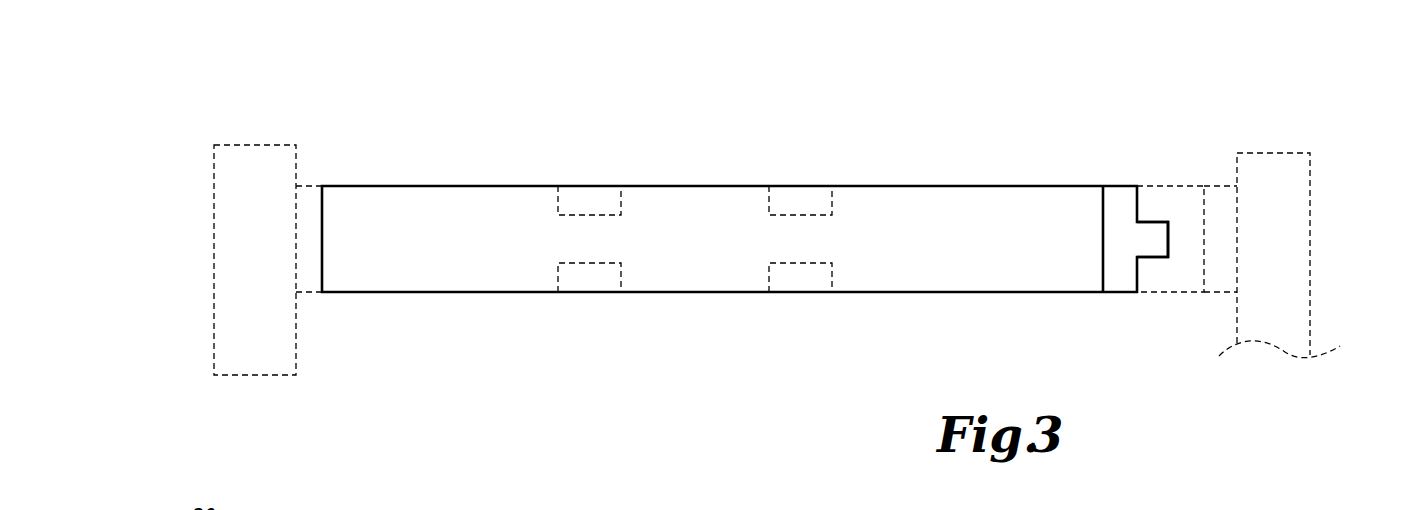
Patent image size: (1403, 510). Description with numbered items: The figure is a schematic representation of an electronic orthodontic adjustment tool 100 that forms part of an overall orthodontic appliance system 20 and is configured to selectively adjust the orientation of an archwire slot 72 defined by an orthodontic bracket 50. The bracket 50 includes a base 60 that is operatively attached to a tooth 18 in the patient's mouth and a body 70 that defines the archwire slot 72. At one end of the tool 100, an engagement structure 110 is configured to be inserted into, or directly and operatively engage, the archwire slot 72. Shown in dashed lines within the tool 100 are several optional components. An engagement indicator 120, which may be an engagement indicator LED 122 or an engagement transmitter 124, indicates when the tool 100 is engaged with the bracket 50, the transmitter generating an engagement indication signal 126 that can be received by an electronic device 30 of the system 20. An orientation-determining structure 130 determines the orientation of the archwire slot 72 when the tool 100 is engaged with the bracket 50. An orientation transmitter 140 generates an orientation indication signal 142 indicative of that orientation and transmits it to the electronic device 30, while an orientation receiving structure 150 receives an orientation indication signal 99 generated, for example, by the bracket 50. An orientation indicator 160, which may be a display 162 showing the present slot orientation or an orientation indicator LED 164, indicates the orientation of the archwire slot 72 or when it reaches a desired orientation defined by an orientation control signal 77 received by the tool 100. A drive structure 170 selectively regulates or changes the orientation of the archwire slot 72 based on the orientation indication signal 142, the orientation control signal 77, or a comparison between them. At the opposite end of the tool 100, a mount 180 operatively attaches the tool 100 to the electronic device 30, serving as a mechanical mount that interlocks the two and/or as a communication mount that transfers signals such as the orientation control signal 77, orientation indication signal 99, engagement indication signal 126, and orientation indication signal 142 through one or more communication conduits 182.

The tooth 18 is at (1310, 227).
The orthodontic appliance system 20 is at (268, 48).
The electronic device 30 is at (247, 375).
The orthodontic bracket 50 is at (1188, 168).
The base 60 is at (1218, 187).
The body 70 is at (1157, 186).
The archwire slot 72 is at (1168, 238).
The orientation control signal 77 is at (801, 300).
The orientation indication signal 99 is at (800, 77).
The electronic orthodontic adjustment tool 100 is at (320, 112).
The engagement structure 110 is at (1140, 233).
The engagement indicator 120 is at (565, 300).
The engagement indicator LED 122 is at (602, 284).
The engagement transmitter 124 is at (609, 274).
The engagement indication signal 126 is at (587, 292).
The orientation-determining structure 130 is at (1118, 197).
The orientation transmitter 140 is at (572, 178).
The orientation indication signal 142 is at (591, 186).
The orientation receiving structure 150 is at (780, 178).
The orientation indicator 160 is at (781, 300).
The display 162 is at (816, 285).
The orientation indicator LED 164 is at (825, 274).
The drive structure 170 is at (1115, 280).
The mount 180 is at (308, 283).
The communication conduit 182 is at (308, 197).